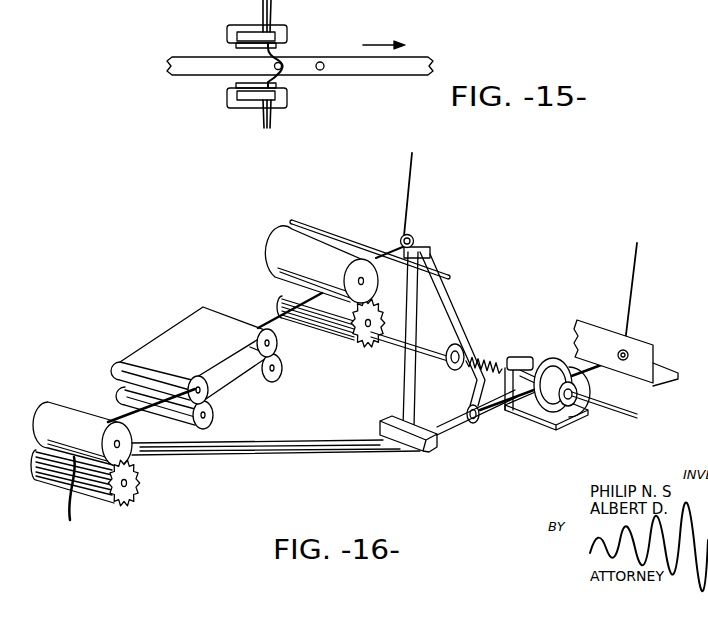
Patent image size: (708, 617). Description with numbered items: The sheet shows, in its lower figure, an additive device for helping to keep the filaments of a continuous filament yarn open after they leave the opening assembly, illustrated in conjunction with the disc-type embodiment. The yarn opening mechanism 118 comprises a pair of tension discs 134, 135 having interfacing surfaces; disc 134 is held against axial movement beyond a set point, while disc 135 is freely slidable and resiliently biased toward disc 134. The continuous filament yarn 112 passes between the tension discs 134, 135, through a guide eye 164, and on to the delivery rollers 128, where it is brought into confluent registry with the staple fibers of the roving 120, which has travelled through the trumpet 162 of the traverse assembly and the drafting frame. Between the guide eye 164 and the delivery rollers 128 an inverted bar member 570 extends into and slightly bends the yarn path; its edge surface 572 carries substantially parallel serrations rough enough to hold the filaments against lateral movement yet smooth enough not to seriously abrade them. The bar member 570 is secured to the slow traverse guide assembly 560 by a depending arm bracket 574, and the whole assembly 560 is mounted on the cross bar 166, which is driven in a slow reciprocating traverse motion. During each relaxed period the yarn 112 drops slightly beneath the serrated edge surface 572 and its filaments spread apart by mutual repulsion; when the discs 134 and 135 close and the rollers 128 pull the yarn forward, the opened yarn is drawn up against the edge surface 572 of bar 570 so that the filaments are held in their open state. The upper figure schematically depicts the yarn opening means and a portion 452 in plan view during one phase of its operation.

In FIG. 15, the thread 452 is at (345, 70).
In FIG. 16, the continuous filament yarn 112 is at (332, 455).
In FIG. 16, the yarn opening mechanism 118 is at (544, 433).
In FIG. 16, the roving 120 is at (413, 188).
In FIG. 16, the delivery rollers 128 is at (138, 466).
In FIG. 16, the tension disc 134 is at (590, 389).
In FIG. 16, the tension disc 135 is at (552, 359).
In FIG. 16, the trumpet 162 is at (414, 236).
In FIG. 16, the guide eye 164 is at (480, 422).
In FIG. 16, the cross bar 166 is at (353, 230).
In FIG. 16, the slow traverse guide assembly 560 is at (471, 320).
In FIG. 16, the inverted bar member 570 is at (438, 448).
In FIG. 16, the edge surface 572 is at (422, 452).
In FIG. 16, the depending arm bracket 574 is at (408, 367).